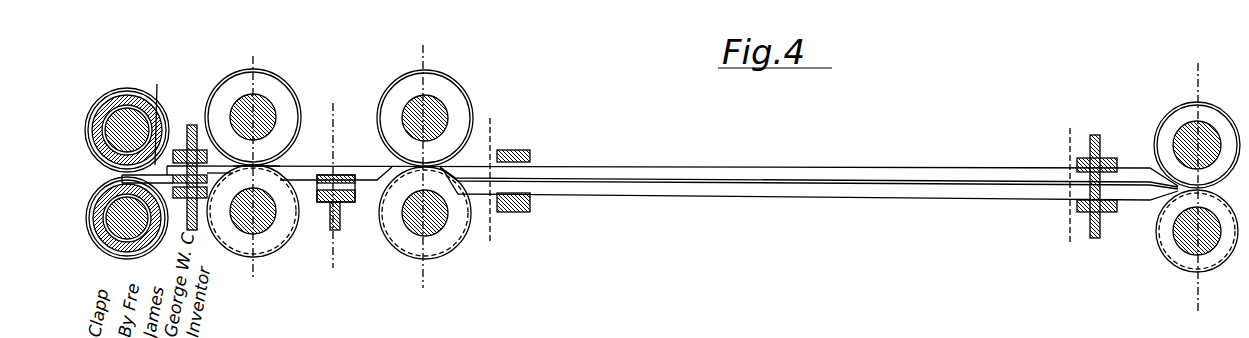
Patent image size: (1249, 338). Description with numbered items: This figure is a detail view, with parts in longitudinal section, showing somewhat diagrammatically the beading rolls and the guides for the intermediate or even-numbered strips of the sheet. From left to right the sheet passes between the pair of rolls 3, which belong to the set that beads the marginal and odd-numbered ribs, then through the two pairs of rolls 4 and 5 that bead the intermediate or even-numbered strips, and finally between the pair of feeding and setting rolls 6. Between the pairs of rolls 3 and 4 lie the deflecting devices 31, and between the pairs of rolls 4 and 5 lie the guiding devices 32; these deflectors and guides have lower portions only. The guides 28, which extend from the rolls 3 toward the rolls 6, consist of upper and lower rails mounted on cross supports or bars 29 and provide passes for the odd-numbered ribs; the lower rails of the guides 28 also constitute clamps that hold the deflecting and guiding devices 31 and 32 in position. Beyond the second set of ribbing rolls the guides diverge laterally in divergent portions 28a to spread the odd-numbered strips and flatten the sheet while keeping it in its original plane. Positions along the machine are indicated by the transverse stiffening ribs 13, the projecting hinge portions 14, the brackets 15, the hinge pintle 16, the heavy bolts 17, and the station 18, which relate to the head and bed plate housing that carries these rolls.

The pair of rolls 3 is at (102, 204).
The pair of rolls 4 is at (279, 91).
The pair of rolls 5 is at (453, 96).
The feeding and setting rolls 6 is at (1173, 117).
The transverse stiffening ribs 13 is at (272, 56).
The projecting hinge portions 14 is at (352, 103).
The brackets 15 is at (445, 45).
The hinge pintle 16 is at (528, 118).
The heavy bolts 17 is at (1070, 128).
The third roller station 18 is at (1222, 64).
The guides 28 is at (560, 170).
The divergent portions of the guides 28a is at (850, 173).
The cross supports or bars 29 is at (192, 125).
The deflecting devices 31 is at (154, 115).
The guiding devices 32 is at (303, 167).